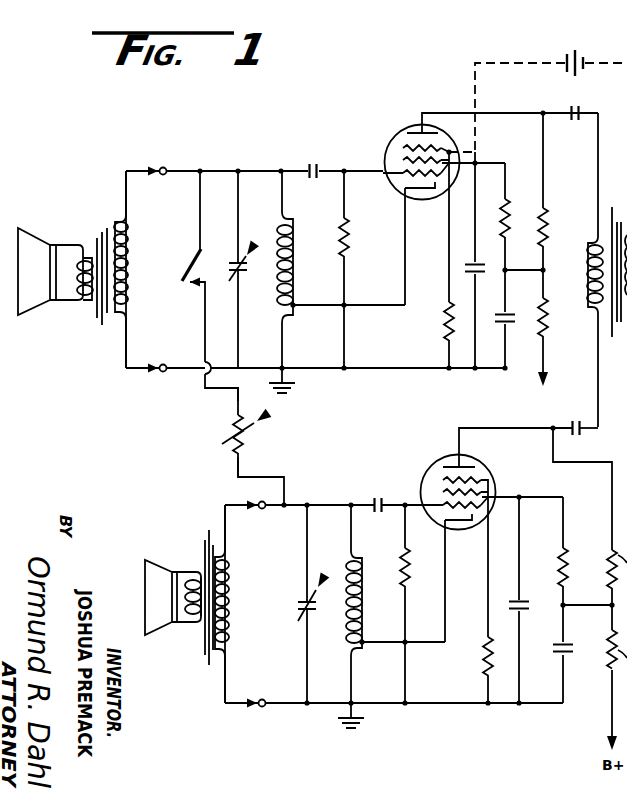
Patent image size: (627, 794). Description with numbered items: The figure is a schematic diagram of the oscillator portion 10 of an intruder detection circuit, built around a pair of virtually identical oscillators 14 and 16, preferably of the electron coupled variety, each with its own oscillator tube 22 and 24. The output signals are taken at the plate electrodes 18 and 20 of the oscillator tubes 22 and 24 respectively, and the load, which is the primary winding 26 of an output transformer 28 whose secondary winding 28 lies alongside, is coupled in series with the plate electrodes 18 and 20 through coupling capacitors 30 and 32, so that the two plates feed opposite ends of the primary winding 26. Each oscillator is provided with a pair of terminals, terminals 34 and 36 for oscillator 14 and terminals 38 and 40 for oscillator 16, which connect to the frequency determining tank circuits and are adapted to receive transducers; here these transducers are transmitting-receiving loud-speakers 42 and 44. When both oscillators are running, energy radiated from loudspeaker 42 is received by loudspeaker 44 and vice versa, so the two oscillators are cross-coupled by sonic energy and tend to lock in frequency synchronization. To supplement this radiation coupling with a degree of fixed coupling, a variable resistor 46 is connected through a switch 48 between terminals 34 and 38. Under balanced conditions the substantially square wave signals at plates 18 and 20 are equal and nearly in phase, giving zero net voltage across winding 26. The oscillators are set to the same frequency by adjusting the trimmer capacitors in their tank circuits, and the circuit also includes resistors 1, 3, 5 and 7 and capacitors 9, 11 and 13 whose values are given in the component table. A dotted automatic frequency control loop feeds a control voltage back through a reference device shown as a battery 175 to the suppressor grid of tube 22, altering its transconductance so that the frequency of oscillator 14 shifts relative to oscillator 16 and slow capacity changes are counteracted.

The oscillator portion 10 is at (316, 197).
The oscillator 14 is at (384, 120).
The oscillator 16 is at (427, 450).
The plate electrode 18 is at (438, 133).
The plate electrode 20 is at (462, 462).
The oscillator tube 22 is at (383, 152).
The oscillator tube 24 is at (421, 485).
The primary winding 26 is at (588, 276).
The output transformer 28 is at (619, 203).
The coupling capacitor 30 is at (581, 104).
The coupling capacitor 32 is at (581, 437).
The terminal 34 is at (165, 169).
The terminal 36 is at (162, 376).
The terminal 38 is at (259, 499).
The terminal 40 is at (264, 708).
The loud-speaker 42 is at (59, 244).
The loud-speaker 44 is at (168, 572).
The variable resistor 46 is at (253, 445).
The switch 48 is at (194, 265).
The resistor 1 is at (340, 241).
The resistor 3 is at (510, 214).
The resistor 5 is at (549, 230).
The resistor 7 is at (549, 322).
The capacitor 9 is at (313, 180).
The capacitor 11 is at (472, 266).
The capacitor 13 is at (514, 325).
The battery 175 is at (587, 41).